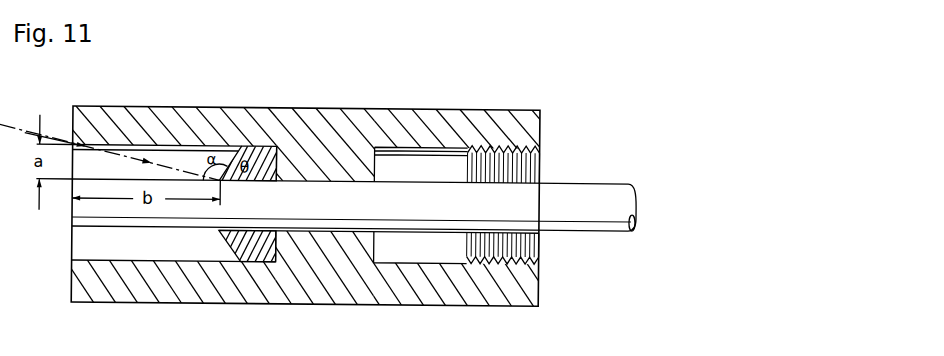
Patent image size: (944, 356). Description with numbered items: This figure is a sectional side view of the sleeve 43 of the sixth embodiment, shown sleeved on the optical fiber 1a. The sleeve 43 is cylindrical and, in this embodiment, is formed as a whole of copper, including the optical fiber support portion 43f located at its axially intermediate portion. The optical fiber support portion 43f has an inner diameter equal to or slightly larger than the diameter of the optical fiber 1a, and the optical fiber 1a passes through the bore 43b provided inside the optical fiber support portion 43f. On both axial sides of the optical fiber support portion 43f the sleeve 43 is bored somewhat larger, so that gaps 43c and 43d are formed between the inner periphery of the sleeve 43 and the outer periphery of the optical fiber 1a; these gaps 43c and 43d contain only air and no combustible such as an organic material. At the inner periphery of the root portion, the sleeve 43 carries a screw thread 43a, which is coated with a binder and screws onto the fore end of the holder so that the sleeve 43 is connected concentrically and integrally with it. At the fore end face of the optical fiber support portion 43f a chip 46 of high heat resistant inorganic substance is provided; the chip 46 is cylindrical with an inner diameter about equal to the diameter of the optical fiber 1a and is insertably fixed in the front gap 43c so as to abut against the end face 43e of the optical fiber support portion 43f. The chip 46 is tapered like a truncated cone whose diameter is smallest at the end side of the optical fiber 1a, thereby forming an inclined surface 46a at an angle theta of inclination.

The sleeve 43 is at (325, 103).
The screw thread 43a is at (507, 154).
The bore 43b is at (313, 218).
The gap 43c is at (135, 252).
The gap 43d is at (425, 250).
The end face 43e is at (278, 231).
The optical fiber support portion 43f is at (348, 162).
The chip 46 is at (247, 257).
The inclined surface 46a is at (234, 233).
The optical fiber 1a is at (589, 194).